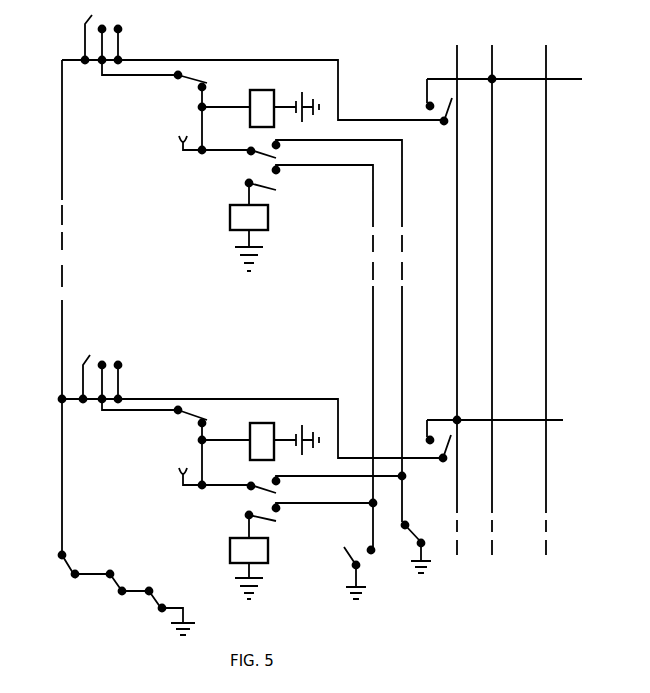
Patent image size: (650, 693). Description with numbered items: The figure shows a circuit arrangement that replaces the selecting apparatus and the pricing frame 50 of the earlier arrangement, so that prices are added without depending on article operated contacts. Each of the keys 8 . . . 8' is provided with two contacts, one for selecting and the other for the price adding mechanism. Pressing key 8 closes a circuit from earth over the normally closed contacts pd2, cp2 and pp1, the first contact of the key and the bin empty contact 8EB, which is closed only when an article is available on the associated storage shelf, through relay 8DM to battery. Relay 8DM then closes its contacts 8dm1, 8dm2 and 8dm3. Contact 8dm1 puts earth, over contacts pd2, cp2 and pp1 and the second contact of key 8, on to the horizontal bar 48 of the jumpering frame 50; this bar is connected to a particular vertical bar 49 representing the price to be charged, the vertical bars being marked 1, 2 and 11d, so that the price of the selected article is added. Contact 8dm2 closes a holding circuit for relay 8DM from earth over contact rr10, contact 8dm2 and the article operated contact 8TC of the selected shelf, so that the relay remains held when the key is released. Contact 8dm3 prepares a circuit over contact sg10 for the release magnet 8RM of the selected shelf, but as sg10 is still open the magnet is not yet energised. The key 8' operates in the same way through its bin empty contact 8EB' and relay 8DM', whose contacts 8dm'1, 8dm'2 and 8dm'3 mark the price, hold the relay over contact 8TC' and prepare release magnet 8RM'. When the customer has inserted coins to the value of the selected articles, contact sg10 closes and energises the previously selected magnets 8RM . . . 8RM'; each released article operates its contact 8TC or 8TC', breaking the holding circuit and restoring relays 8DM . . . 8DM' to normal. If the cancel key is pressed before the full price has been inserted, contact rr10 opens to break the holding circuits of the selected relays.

The wire 1 is at (457, 290).
The wire 2 is at (491, 290).
The wire 11d is at (550, 290).
The horizontal bar 48 is at (552, 421).
The vertical bar 49 is at (457, 514).
The jumpering frame 50 is at (514, 241).
The key 8 is at (95, 36).
The bin empty contact 8EB is at (182, 113).
The relay 8DM is at (260, 99).
The article operated contact 8TC is at (171, 140).
The contact 8dm1 is at (419, 102).
The contact 8dm2 is at (302, 331).
The contact 8dm3 is at (310, 356).
The release magnet 8RM is at (229, 227).
The key 8' is at (99, 370).
The bin empty contact 8EB' is at (182, 448).
The relay 8DM' is at (260, 432).
The article operated contact 8TC' is at (171, 473).
The contact 8dm'1 is at (428, 441).
The contact 8dm'2 is at (304, 486).
The contact 8dm'3 is at (311, 514).
The release magnet 8RM' is at (229, 557).
The contact rr10 is at (428, 547).
The contact sg10 is at (371, 573).
The normally closed contact pp1 is at (78, 568).
The normally closed contact cp2 is at (116, 588).
The normally closed contact pd2 is at (158, 613).